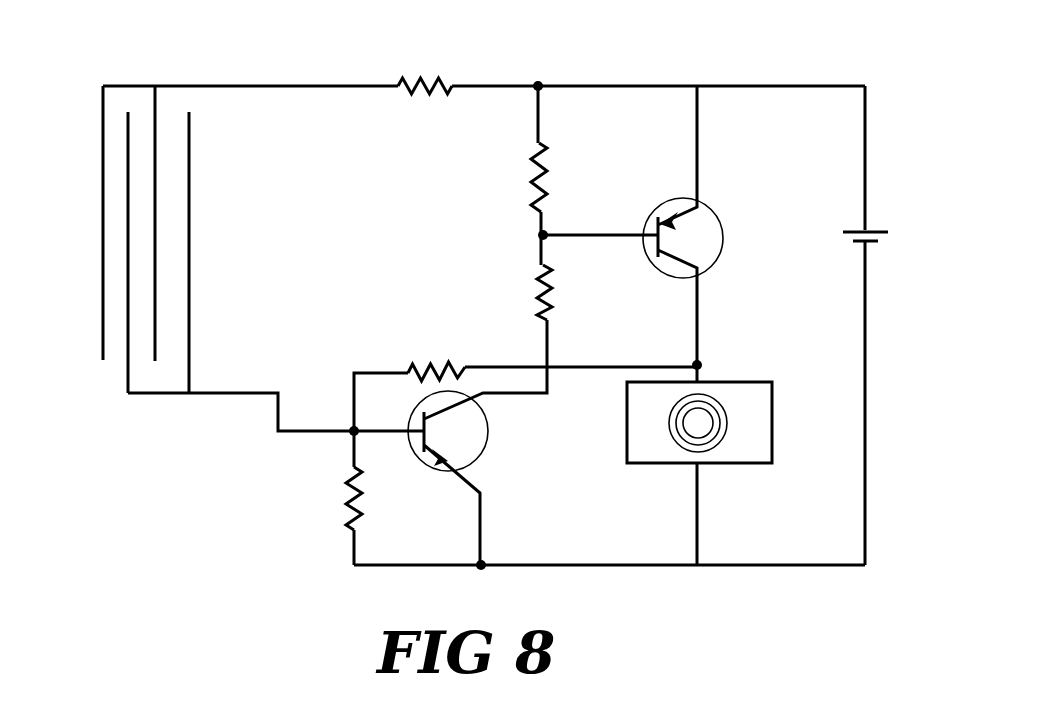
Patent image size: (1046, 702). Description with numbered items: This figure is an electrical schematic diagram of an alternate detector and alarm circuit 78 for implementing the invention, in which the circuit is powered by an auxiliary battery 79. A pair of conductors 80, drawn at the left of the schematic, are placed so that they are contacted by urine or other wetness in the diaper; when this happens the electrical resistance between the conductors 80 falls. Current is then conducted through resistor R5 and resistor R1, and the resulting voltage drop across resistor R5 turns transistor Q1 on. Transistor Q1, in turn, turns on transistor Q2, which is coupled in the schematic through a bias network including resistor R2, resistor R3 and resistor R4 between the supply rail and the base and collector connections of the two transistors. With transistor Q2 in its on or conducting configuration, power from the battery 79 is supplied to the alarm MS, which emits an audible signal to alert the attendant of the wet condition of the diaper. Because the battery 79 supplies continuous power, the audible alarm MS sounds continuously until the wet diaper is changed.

The detector circuit 78 is at (170, 66).
The auxiliary battery 79 is at (893, 190).
The conductors 80 is at (80, 250).
The resistor R1 is at (425, 71).
The resistor R2 is at (521, 177).
The resistor R3 is at (525, 292).
The resistor R4 is at (525, 382).
The resistor R5 is at (336, 498).
The transistor Q1 is at (436, 478).
The transistor Q2 is at (650, 225).
The alarm MS is at (721, 460).